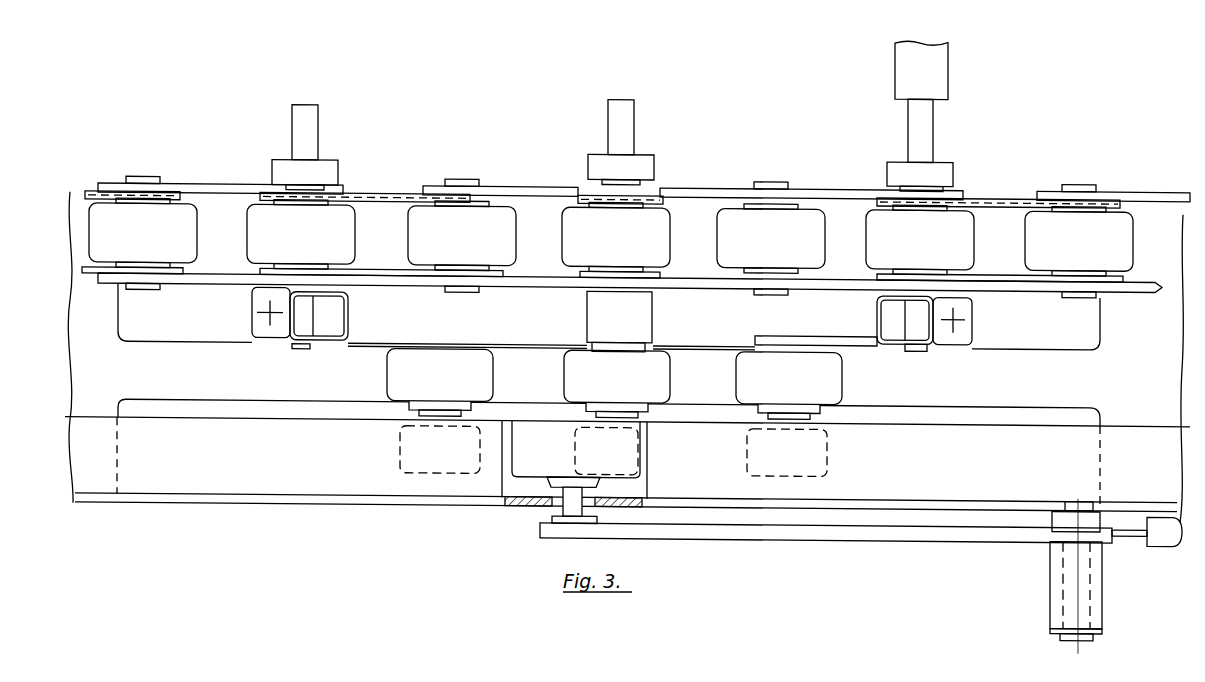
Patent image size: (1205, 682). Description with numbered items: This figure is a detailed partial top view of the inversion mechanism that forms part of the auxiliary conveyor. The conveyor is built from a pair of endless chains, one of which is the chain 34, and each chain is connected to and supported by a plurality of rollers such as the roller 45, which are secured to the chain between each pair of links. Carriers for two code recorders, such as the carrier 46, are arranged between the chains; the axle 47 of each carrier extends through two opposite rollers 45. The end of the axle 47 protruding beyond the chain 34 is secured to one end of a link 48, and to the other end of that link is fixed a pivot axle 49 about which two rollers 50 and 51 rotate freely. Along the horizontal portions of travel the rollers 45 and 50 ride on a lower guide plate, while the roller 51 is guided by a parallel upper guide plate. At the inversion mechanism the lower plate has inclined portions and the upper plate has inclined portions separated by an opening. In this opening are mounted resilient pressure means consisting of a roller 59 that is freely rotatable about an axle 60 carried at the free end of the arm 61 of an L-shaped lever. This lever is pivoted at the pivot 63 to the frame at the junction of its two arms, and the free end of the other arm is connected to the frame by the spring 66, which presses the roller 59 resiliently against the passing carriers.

The endless chain 34 is at (1150, 173).
The roller 45 is at (962, 240).
The carrier 46 is at (895, 71).
The axle 47 is at (908, 123).
The link 48 is at (609, 319).
The pivot axle 49 is at (785, 344).
The roller 50 is at (832, 376).
The roller 51 is at (830, 450).
The roller 59 is at (523, 456).
The axle 60 is at (587, 488).
The arm 61 is at (710, 527).
The pivot 63 is at (1072, 494).
The spring 66 is at (1165, 527).